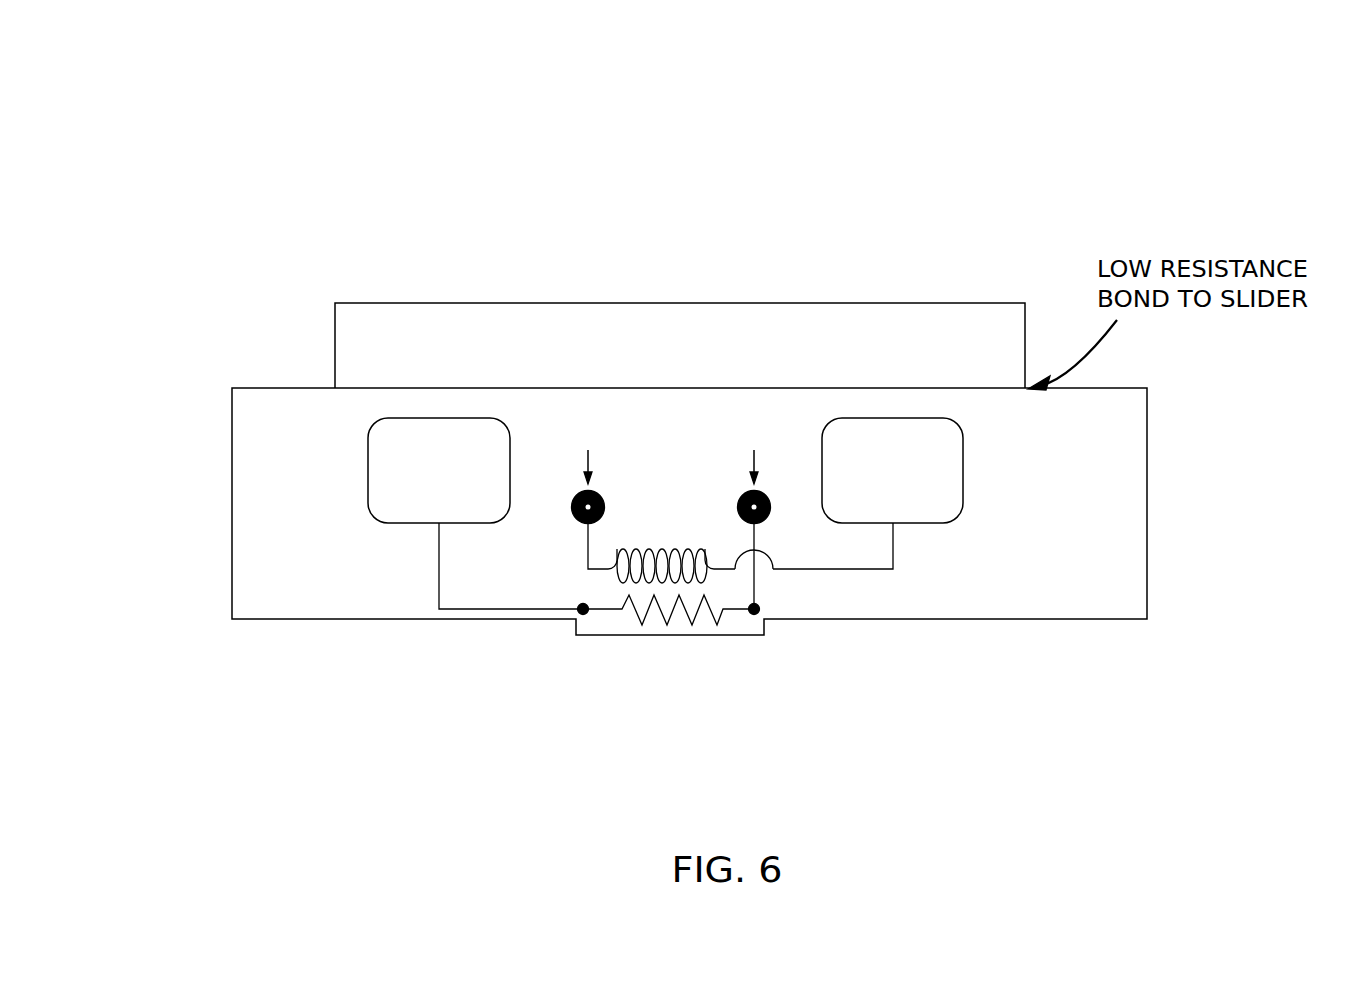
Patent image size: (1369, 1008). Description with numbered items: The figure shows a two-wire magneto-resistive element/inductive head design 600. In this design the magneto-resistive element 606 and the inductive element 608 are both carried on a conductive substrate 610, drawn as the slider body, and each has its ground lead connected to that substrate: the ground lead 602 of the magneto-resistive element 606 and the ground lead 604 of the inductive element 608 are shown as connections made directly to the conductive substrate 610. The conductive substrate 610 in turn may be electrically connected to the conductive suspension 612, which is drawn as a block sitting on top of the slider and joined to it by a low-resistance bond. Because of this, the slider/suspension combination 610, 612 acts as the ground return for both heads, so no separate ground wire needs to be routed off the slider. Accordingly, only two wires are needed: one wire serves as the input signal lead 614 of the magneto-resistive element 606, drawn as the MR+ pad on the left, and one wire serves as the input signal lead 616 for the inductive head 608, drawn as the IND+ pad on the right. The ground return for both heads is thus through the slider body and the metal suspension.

The two-wire magneto-resistive element/inductive head design 600 is at (1002, 163).
The ground lead of the magneto-resistive element 602 is at (770, 513).
The ground lead of the inductive element 604 is at (572, 513).
The magneto-resistive element 606 is at (658, 607).
The inductive element 608 is at (725, 570).
The conductive substrate 610 is at (1110, 575).
The conductive suspension 612 is at (898, 320).
The input signal lead of the magneto-resistive element 614 is at (388, 445).
The input signal lead for the inductive head 616 is at (945, 455).